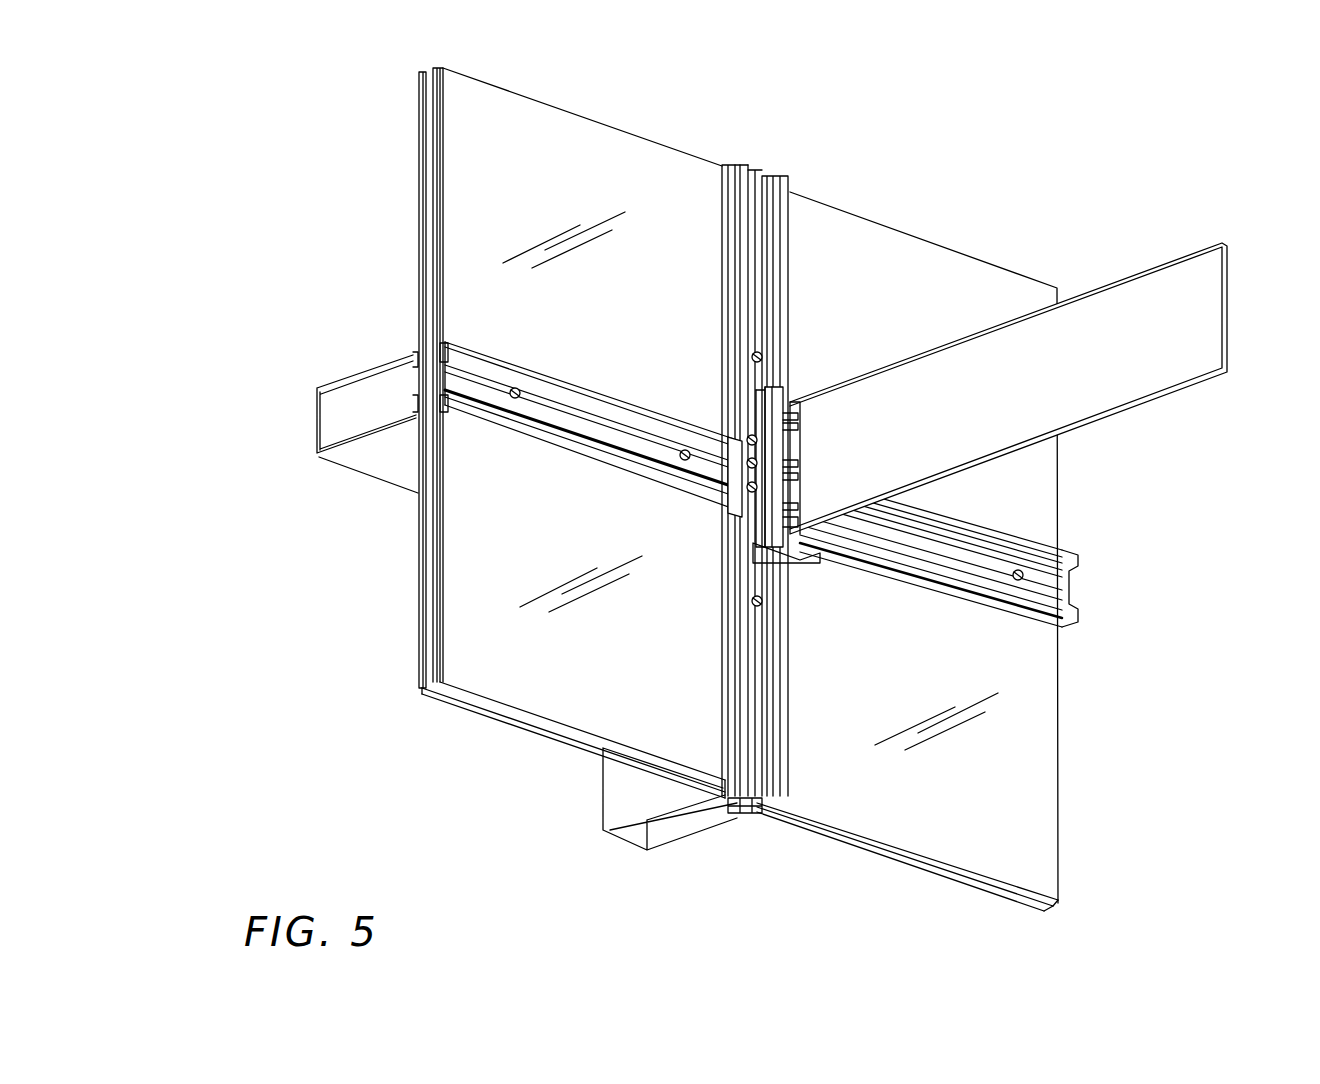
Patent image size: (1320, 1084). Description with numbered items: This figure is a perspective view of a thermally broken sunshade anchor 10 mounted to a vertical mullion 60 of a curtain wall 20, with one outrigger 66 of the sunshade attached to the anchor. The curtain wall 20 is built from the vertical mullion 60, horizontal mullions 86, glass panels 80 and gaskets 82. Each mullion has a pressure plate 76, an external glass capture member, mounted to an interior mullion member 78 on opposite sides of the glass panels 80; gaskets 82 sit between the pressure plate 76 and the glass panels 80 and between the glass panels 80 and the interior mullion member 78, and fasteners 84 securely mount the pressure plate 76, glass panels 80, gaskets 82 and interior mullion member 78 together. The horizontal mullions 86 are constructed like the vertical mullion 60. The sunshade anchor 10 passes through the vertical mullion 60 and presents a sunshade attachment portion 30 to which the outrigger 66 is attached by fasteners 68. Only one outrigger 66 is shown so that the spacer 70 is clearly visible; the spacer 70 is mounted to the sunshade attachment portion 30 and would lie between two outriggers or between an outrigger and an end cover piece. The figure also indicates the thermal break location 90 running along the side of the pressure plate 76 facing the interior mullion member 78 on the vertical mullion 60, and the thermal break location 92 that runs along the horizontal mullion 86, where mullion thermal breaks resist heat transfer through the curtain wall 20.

The thermally broken sunshade anchor 10 is at (810, 576).
The curtain wall 20 is at (266, 81).
The sunshade attachment portion 30 is at (811, 590).
The vertical mullion 60 is at (636, 880).
The outrigger 66 is at (1183, 250).
The fasteners 68 is at (750, 437).
The spacer 70 is at (796, 430).
The pressure plate 76 is at (763, 177).
The interior mullion member 78 is at (345, 373).
The glass panels 80 is at (1042, 822).
The gaskets 82 is at (712, 183).
The fasteners 84 is at (512, 390).
The horizontal mullions 86 is at (260, 481).
The thermal break location 90 is at (770, 780).
The thermal break location 92 is at (463, 375).